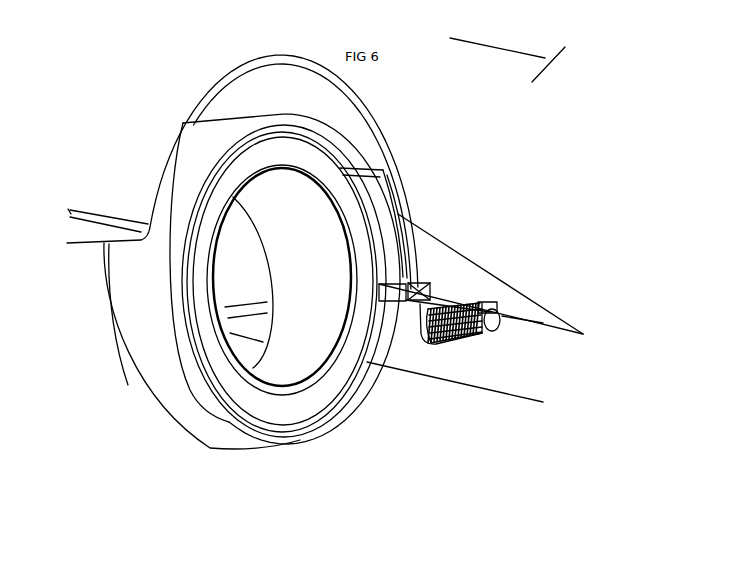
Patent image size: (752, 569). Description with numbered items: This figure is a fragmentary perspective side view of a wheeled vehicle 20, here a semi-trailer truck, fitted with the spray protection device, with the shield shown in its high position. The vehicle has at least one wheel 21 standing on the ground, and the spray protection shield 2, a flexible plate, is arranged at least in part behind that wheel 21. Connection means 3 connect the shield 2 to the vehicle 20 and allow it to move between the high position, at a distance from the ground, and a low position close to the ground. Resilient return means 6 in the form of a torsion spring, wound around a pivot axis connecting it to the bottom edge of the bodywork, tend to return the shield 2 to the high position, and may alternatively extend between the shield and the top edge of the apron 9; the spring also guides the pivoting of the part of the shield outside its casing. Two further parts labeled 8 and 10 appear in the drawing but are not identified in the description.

The spray protection shield 2 is at (390, 262).
The connection means 3 is at (393, 173).
The resilient return means 6 is at (467, 337).
The pin 8 is at (583, 334).
The apron 9 is at (361, 372).
The stop block 10 is at (416, 300).
The wheeled vehicle 20 is at (557, 55).
The wheel 21 is at (122, 343).